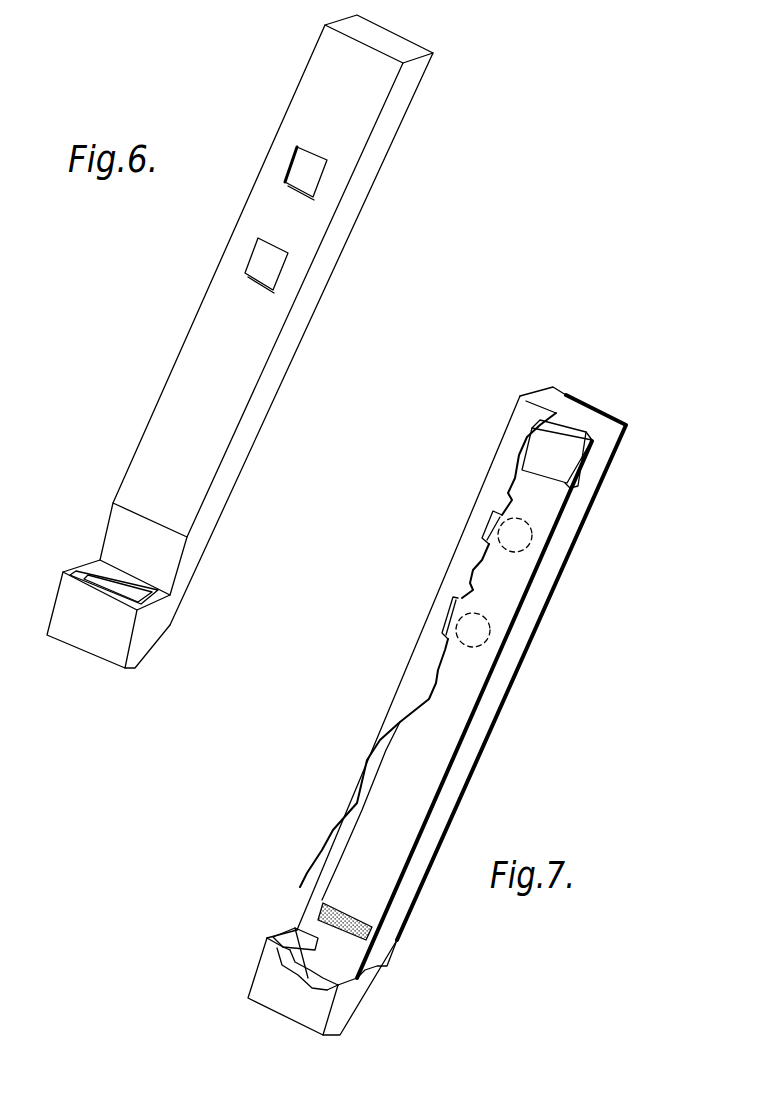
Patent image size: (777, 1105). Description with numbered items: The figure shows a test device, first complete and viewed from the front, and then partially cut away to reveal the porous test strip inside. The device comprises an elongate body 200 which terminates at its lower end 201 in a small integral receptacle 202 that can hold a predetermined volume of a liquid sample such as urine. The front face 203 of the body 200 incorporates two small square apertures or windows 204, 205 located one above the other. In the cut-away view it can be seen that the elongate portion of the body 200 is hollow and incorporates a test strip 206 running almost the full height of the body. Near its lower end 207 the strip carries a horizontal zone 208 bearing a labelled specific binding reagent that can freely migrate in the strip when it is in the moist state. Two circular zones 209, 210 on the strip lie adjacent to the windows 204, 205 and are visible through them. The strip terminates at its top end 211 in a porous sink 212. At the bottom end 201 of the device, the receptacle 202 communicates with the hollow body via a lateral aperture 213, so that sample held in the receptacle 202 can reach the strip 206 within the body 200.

In FIG. 6, the elongate body 200 is at (347, 222).
In FIG. 7, the elongate body 200 is at (577, 535).
In FIG. 6, the lower end 201 is at (172, 627).
In FIG. 7, the lower end 201 is at (373, 997).
In FIG. 6, the receptacle 202 is at (85, 563).
In FIG. 7, the receptacle 202 is at (267, 938).
In FIG. 6, the front face 203 is at (175, 388).
In FIG. 6, the aperture or window 204 is at (250, 257).
In FIG. 7, the aperture or window 204 is at (457, 618).
In FIG. 6, the aperture or window 205 is at (293, 163).
In FIG. 7, the aperture or window 205 is at (495, 518).
In FIG. 7, the test strip 206 is at (460, 740).
In FIG. 7, the lower end of test strip 207 is at (307, 990).
In FIG. 7, the horizontal zone 208 is at (330, 903).
In FIG. 7, the circular zone 209 is at (492, 633).
In FIG. 7, the circular zone 210 is at (533, 548).
In FIG. 7, the top end of test strip 211 is at (567, 497).
In FIG. 7, the porous sink 212 is at (575, 433).
In FIG. 7, the lateral aperture 213 is at (293, 932).